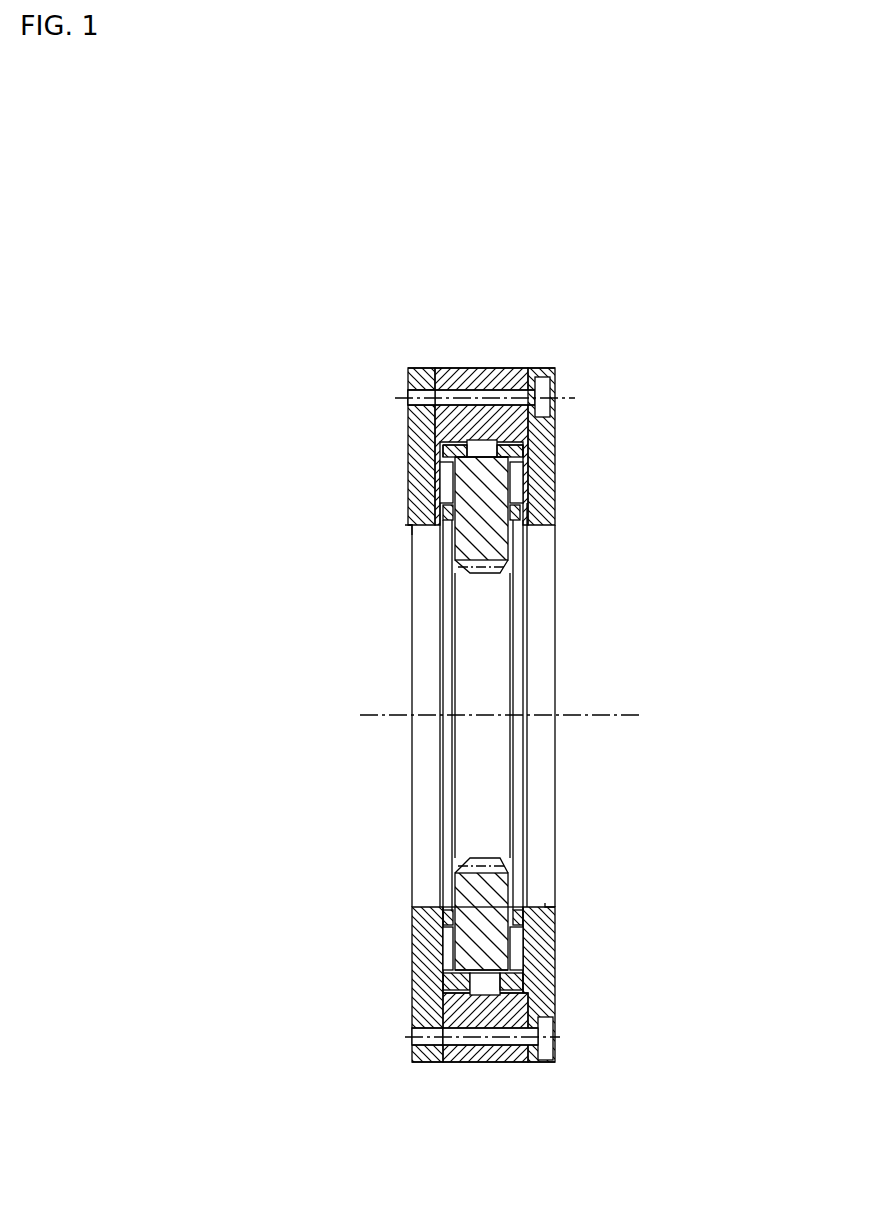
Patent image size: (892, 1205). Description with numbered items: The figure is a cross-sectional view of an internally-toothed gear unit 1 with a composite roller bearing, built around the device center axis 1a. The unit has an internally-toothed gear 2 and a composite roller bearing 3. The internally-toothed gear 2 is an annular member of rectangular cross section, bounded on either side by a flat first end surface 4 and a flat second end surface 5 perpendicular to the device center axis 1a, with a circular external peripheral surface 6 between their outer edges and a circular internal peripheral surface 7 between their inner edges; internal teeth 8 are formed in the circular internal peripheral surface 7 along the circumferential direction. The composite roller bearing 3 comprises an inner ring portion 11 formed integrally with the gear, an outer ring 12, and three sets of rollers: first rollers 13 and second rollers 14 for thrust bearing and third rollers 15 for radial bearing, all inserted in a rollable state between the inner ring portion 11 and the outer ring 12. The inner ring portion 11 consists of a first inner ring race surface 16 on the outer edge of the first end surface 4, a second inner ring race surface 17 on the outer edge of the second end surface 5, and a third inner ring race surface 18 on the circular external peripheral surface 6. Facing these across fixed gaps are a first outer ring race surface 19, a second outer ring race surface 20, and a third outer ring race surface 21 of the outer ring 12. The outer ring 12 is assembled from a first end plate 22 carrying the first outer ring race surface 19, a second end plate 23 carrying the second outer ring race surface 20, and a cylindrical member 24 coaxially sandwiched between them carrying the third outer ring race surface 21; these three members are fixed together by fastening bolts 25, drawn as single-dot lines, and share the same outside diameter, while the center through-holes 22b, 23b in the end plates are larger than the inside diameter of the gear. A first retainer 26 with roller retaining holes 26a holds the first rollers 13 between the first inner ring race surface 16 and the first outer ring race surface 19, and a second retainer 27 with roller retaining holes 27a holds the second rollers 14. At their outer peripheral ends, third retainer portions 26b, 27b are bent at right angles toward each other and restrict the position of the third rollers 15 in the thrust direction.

The internally-toothed gear unit with a composite roller bearing 1 is at (672, 385).
The device center axis 1a is at (634, 712).
The internally-toothed gear 2 is at (560, 553).
The composite roller bearing 3 is at (565, 433).
The first end surface 4 is at (455, 540).
The second end surface 5 is at (505, 540).
The circular external peripheral surface 6 is at (488, 456).
The circular internal peripheral surface 7 is at (460, 572).
The internal teeth 8 is at (481, 586).
The inner ring portion 11 is at (335, 862).
The outer ring 12 is at (690, 870).
The first rollers 13 is at (445, 483).
The second rollers 14 is at (521, 498).
The third rollers 15 is at (477, 440).
The first inner ring race surface 16 is at (452, 948).
The second inner ring race surface 17 is at (462, 910).
The third inner ring race surface 18 is at (480, 980).
The first outer ring race surface 19 is at (450, 967).
The second outer ring race surface 20 is at (520, 940).
The third outer ring race surface 21 is at (480, 985).
The first end plate 22 is at (425, 1062).
The center through-hole 22b is at (412, 530).
The second end plate 23 is at (543, 1062).
The center through-hole 23b is at (543, 907).
The cylindrical member 24 is at (485, 1062).
The fastening bolts 25 is at (565, 1038).
The first retainer 26 is at (445, 452).
The roller retaining holes 26a is at (447, 457).
The third retainer portion 26b is at (443, 445).
The second retainer 27 is at (545, 440).
The roller retaining holes 27a is at (530, 455).
The third retainer portion 27b is at (503, 445).